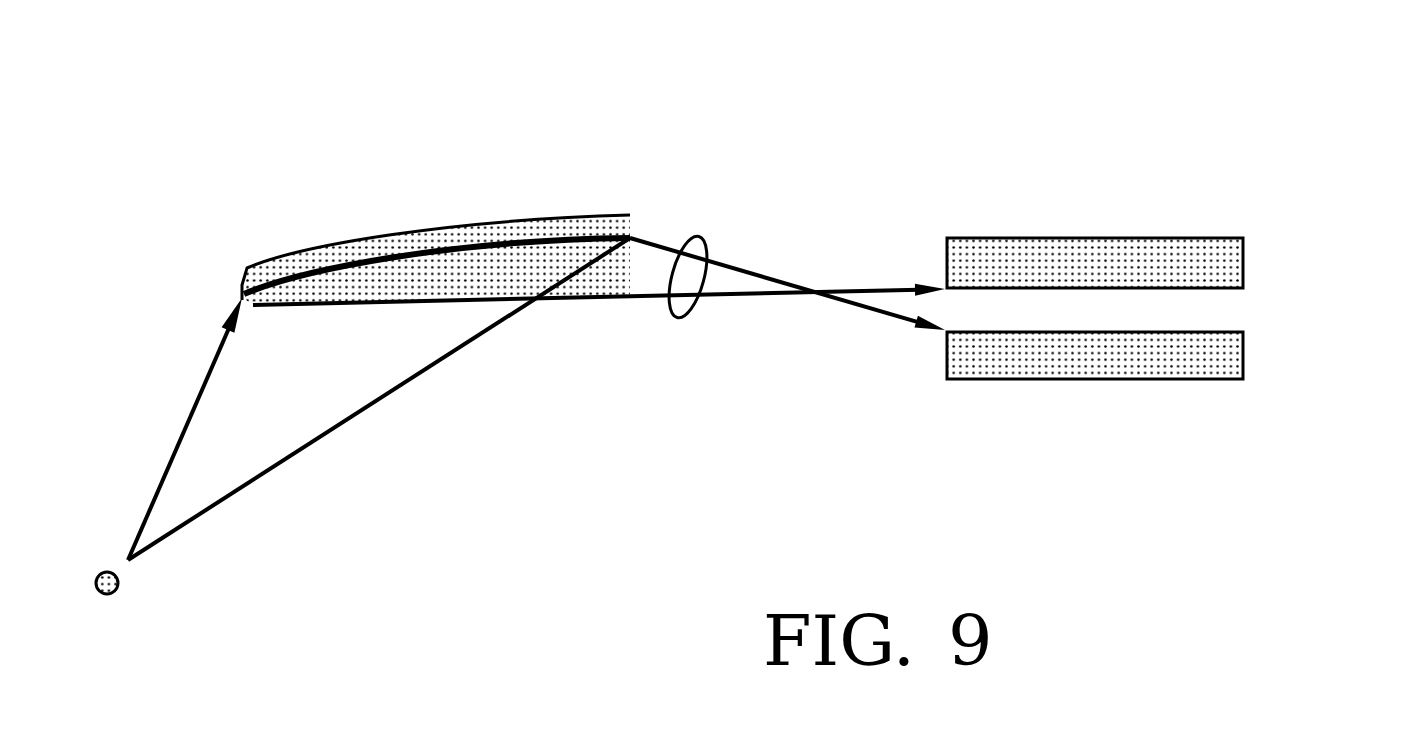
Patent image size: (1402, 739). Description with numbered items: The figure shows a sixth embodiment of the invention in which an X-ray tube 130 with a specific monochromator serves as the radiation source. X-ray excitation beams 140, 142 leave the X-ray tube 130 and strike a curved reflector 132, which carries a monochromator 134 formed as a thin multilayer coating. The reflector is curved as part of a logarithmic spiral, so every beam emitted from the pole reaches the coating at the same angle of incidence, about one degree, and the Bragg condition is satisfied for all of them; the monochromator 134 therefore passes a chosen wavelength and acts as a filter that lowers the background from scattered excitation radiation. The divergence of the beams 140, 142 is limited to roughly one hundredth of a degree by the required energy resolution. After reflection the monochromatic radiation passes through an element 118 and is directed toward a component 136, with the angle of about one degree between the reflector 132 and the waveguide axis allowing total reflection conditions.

The lens 118 is at (697, 237).
The X-ray tube 130 is at (103, 595).
The curved reflector 132 is at (334, 231).
The monochromator 134 is at (546, 240).
The detector 136 is at (1272, 301).
The X-ray excitation beam 140 is at (185, 433).
The X-ray excitation beam 142 is at (312, 443).